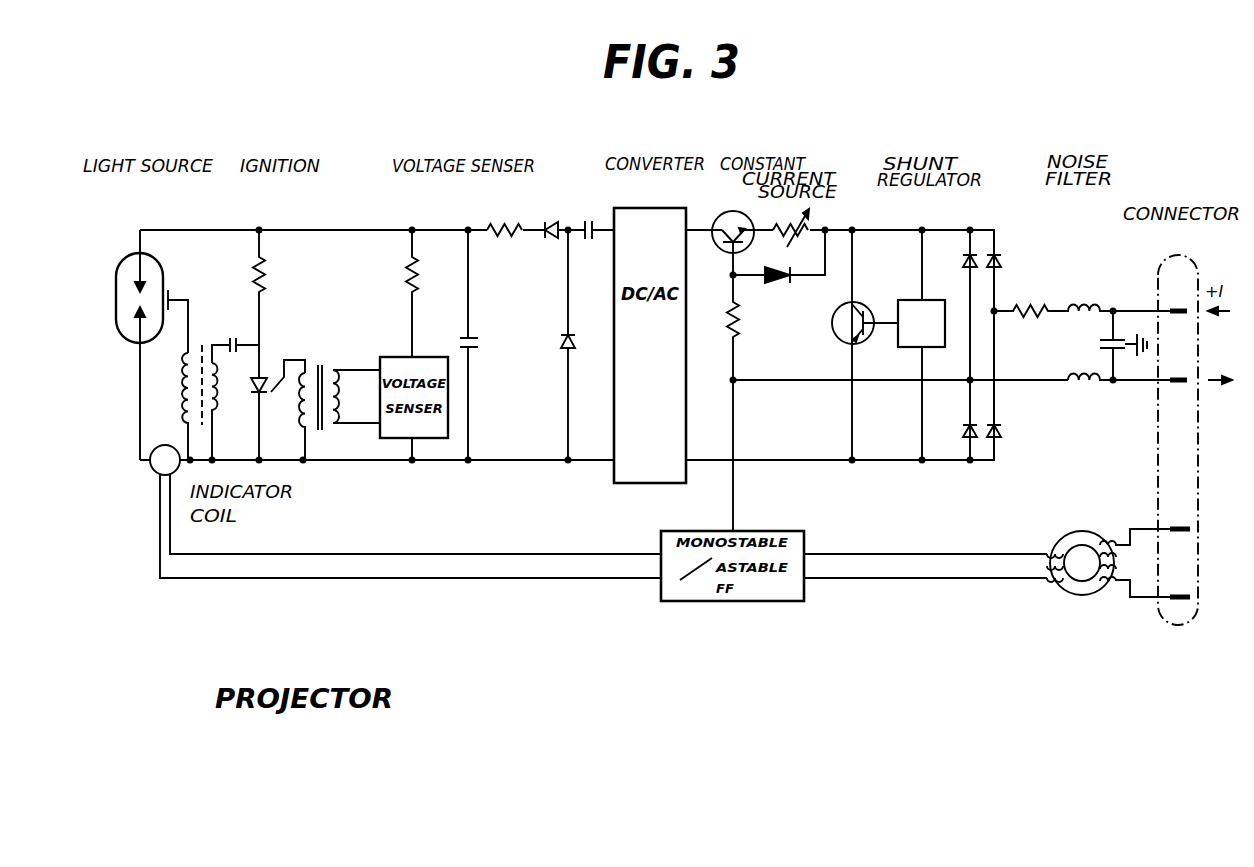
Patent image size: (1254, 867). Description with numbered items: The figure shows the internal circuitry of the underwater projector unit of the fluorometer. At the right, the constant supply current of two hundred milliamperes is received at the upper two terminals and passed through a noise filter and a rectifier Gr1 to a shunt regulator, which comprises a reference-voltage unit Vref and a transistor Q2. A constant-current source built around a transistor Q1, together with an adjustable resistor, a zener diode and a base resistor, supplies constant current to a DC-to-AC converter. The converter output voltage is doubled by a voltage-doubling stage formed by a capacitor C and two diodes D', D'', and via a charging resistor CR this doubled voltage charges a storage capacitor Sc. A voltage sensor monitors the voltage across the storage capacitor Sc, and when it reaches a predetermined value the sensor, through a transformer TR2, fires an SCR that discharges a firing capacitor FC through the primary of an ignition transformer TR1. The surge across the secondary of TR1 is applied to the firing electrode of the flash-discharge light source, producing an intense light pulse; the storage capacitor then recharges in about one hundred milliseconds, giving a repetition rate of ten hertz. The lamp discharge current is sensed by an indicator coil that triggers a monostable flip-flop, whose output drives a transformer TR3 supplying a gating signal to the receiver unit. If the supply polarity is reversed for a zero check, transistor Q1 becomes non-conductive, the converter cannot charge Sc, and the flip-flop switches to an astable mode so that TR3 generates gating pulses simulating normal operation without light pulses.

The ignition transformer TR1 is at (206, 384).
The firing capacitor FC is at (241, 338).
The transformer TR2 is at (339, 399).
The storage capacitor Sc is at (479, 345).
The charging resistor CR is at (504, 238).
The diode of voltage-doubling stage D' is at (551, 242).
The capacitor of voltage-doubling stage C is at (588, 242).
The diode of voltage-doubling stage D'' is at (553, 345).
The constant-current-source transistor Q1 is at (725, 246).
The shunt regulator transistor Q2 is at (851, 345).
The reference-voltage unit Vref is at (921, 345).
The rectifier Gr1 is at (1002, 345).
The transformer TR3 is at (987, 550).